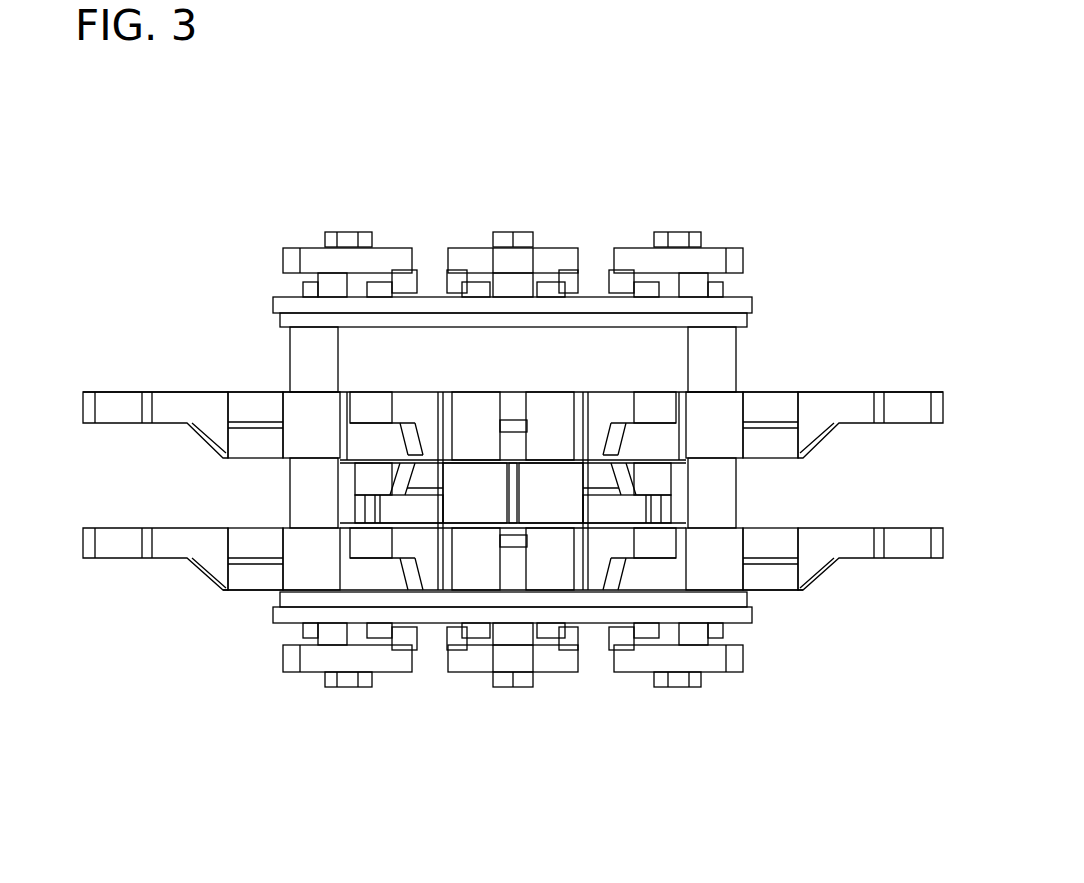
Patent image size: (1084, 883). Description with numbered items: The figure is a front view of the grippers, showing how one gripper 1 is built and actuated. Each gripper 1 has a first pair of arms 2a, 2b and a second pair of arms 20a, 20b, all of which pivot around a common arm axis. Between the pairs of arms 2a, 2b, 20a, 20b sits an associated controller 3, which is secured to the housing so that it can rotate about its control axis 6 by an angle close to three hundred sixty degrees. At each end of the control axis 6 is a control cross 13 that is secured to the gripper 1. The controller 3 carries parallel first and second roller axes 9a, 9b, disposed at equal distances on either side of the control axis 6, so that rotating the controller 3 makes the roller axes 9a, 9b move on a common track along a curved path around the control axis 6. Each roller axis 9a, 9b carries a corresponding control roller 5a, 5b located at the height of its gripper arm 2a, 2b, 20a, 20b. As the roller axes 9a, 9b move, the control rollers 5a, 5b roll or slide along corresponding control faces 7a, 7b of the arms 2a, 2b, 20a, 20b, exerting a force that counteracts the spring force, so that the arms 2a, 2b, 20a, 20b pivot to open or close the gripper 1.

The gripper 1 is at (583, 129).
The control cross 13 is at (480, 255).
The control axis 6 is at (515, 290).
The controller 3 is at (686, 712).
The first roller axis 9a is at (303, 332).
The second roller axis 9b is at (705, 342).
The first control roller 5a is at (293, 410).
The second control roller 5b is at (720, 408).
The first control face 7a is at (240, 545).
The second control face 7b is at (770, 545).
The first arm 2a is at (163, 402).
The second arm 2b is at (818, 402).
The first arm of second pair 20a is at (190, 545).
The second arm of second pair 20b is at (853, 548).